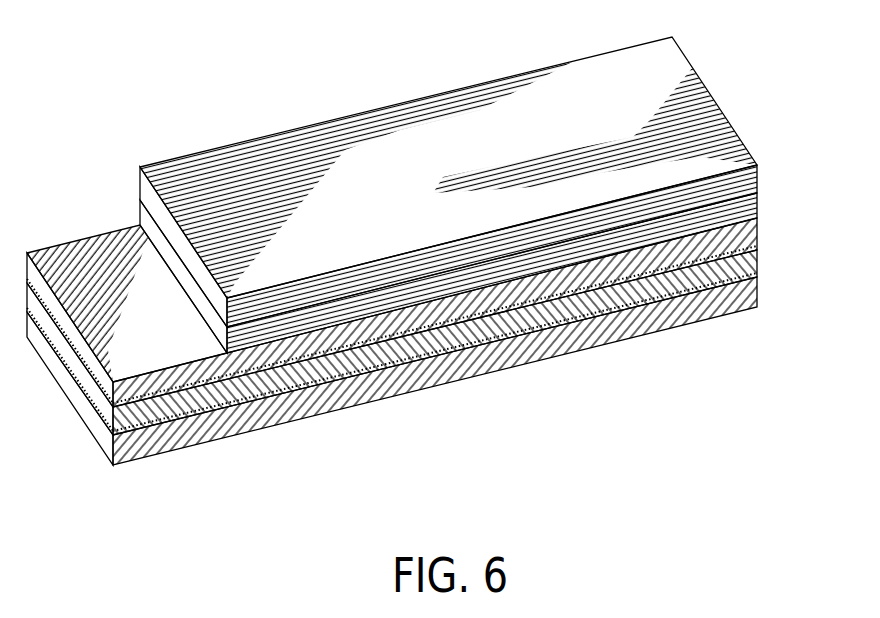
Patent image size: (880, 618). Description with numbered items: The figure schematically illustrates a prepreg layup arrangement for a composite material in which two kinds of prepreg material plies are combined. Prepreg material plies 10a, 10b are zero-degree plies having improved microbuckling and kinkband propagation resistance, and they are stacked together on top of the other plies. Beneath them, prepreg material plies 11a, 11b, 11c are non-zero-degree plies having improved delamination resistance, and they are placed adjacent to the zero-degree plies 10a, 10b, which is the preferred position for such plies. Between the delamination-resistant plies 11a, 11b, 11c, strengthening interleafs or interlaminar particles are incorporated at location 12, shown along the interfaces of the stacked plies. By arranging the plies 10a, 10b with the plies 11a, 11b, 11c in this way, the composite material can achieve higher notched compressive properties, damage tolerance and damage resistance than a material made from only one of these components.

The prepreg material ply 10a is at (758, 180).
The prepreg material ply 10b is at (758, 208).
The prepreg material ply 11a is at (758, 235).
The prepreg material ply 11b is at (758, 262).
The prepreg material ply 11c is at (758, 292).
The location 12 is at (562, 298).